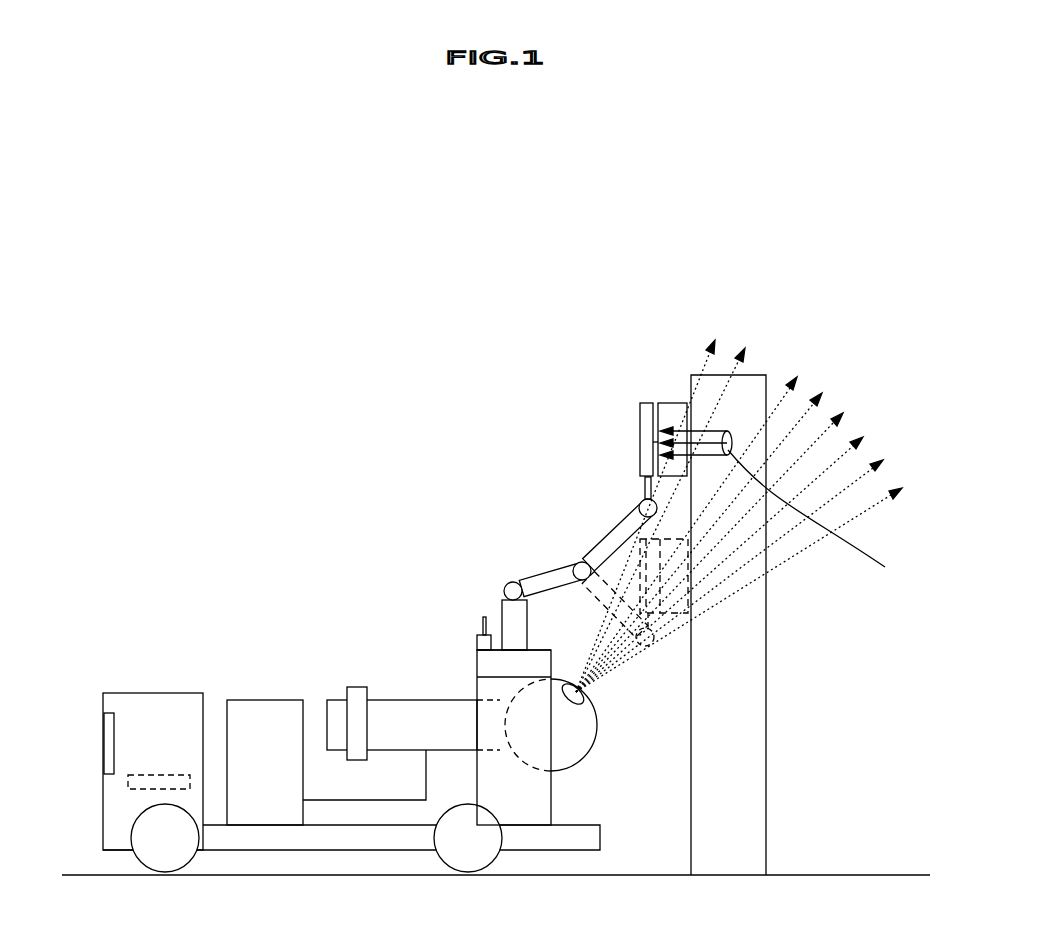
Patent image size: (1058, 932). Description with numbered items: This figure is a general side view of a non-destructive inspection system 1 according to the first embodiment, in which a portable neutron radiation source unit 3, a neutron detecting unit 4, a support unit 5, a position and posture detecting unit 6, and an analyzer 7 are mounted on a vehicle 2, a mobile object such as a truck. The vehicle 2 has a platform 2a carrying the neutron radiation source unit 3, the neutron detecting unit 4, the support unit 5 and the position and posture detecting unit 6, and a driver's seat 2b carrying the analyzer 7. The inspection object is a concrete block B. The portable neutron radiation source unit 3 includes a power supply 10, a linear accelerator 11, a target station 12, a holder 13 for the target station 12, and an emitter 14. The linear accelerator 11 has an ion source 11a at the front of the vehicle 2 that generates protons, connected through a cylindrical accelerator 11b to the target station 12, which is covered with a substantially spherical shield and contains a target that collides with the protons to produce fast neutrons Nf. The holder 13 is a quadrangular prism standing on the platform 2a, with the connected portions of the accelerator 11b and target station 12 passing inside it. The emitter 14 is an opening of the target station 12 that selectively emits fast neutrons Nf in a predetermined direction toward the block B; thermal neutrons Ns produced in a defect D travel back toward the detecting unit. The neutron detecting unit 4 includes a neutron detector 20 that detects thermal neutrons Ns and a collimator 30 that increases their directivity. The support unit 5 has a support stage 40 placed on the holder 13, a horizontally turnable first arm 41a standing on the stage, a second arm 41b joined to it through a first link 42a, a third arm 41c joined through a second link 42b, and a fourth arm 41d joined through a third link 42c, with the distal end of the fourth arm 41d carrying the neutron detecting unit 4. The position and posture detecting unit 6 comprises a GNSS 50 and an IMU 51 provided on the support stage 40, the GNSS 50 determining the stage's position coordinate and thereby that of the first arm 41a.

The non-destructive inspection system 1 is at (347, 401).
The vehicle 2 is at (351, 734).
The platform 2a is at (337, 850).
The driver's seat 2b is at (155, 693).
The portable neutron radiation source unit 3 is at (430, 705).
The neutron detecting unit 4 is at (653, 463).
The support unit 5 is at (546, 522).
The position and posture detecting unit 6 is at (421, 582).
The analyzer 7 is at (160, 775).
The power supply 10 is at (265, 700).
The linear accelerator 11 is at (413, 682).
The ion source 11a is at (357, 687).
The accelerator 11b is at (410, 725).
The target station 12 is at (583, 745).
The holder 13 is at (551, 800).
The emitter 14 is at (583, 706).
The neutron detector 20 is at (643, 403).
The collimator 30 is at (668, 403).
The support stage 40 is at (538, 650).
The first arm 41a is at (500, 600).
The second arm 41b is at (545, 572).
The third arm 41c is at (617, 530).
The fourth arm 41d is at (645, 487).
The first link 42a is at (507, 582).
The second link 42b is at (578, 562).
The third link 42c is at (640, 504).
The GNSS 50 is at (482, 632).
The IMU 51 is at (475, 647).
The thermal neutrons Ns is at (700, 433).
The fast neutrons Nf is at (759, 494).
The defect D is at (813, 521).
The block B is at (766, 735).